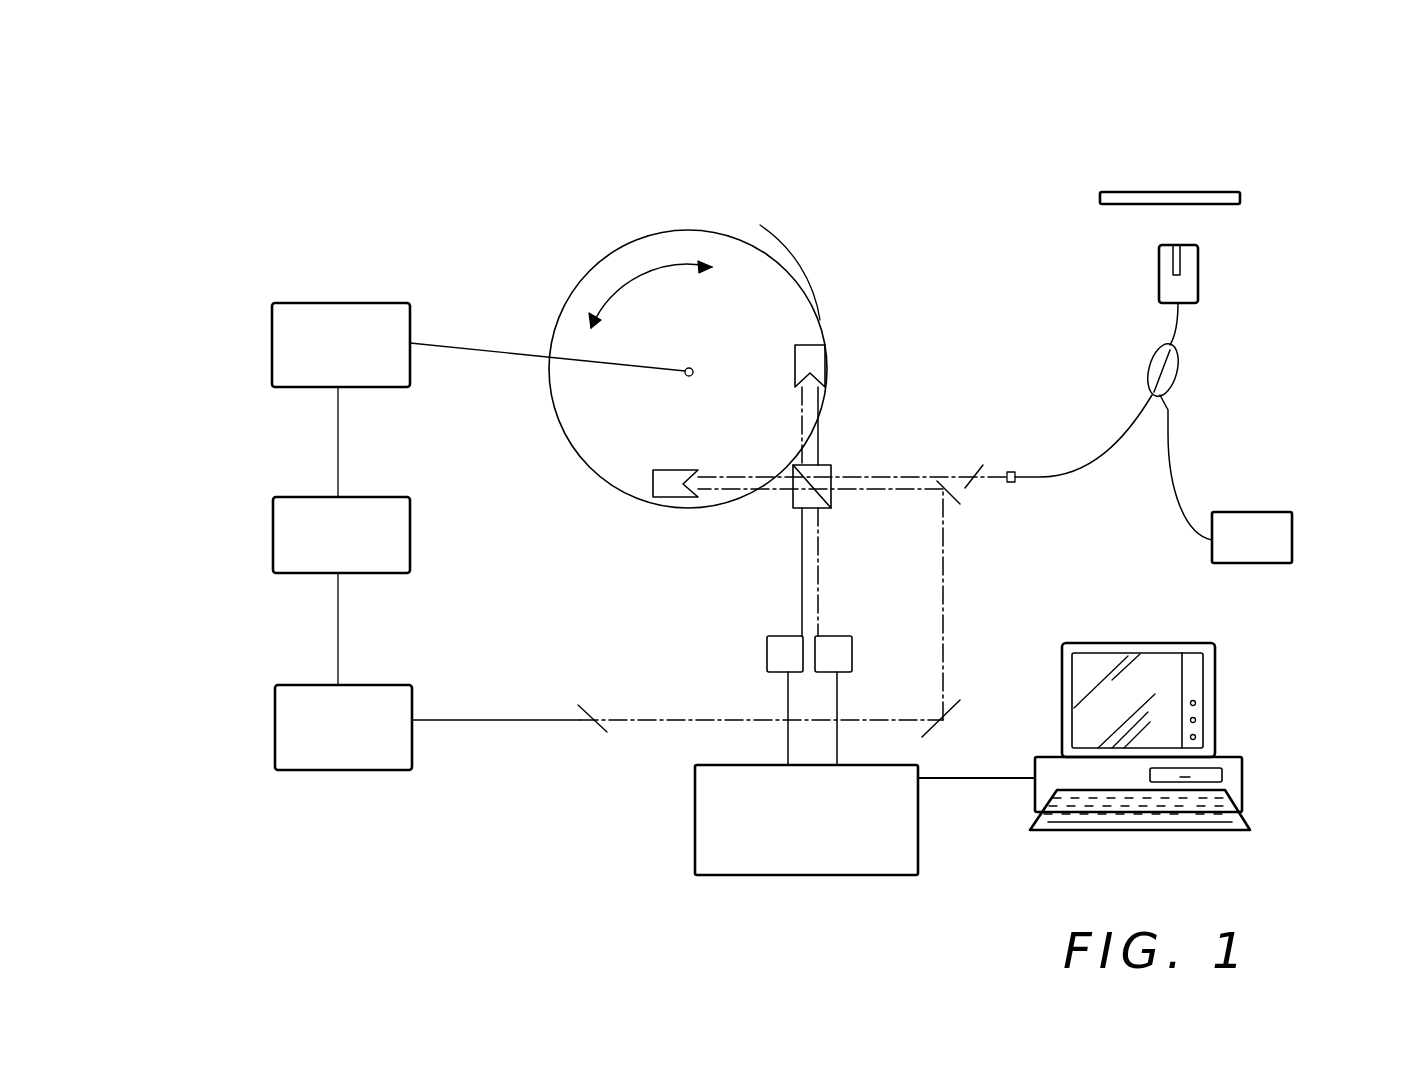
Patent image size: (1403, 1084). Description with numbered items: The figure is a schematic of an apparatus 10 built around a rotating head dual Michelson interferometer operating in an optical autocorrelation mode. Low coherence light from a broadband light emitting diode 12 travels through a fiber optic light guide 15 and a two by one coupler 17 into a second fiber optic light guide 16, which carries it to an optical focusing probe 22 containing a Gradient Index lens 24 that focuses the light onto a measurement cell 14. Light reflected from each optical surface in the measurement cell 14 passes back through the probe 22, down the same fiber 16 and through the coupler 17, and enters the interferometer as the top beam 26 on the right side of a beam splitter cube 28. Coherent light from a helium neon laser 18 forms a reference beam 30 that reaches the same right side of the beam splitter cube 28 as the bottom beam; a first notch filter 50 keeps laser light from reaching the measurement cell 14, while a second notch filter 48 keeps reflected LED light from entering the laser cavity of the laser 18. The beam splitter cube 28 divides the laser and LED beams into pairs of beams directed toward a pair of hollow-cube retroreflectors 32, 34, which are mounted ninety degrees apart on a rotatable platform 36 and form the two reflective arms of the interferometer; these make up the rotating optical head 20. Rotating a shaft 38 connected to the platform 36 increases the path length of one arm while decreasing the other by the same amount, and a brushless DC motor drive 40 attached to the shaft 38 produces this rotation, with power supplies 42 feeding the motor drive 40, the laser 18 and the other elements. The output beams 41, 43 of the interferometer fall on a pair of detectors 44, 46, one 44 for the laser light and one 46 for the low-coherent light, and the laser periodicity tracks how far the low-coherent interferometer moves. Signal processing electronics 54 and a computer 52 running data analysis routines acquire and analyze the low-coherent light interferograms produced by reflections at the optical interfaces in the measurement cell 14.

The apparatus 10 is at (900, 183).
The light emitting diode 12 is at (1292, 528).
The measurement cell 14 is at (1232, 192).
The fiber optic light guide 15 is at (1168, 432).
The fiber optic light guide 16 is at (1178, 318).
The 2 by 1 coupler 17 is at (1178, 362).
The laser 18 is at (400, 772).
The optical head 20 is at (772, 241).
The optical focusing probe 22 is at (1198, 282).
The Gradient Index lens 24 is at (1182, 255).
The top beam 26 is at (896, 477).
The beam splitter cube 28 is at (826, 463).
The reference beam 30 is at (680, 715).
The hollow-cube retroreflector 32 is at (812, 360).
The hollow-cube retroreflector 34 is at (660, 497).
The rotatable platform 36 is at (792, 306).
The shaft 38 is at (497, 358).
The motor drive 40 is at (348, 303).
The output beam 41 is at (802, 538).
The power supplies 42 is at (410, 533).
The output beam 43 is at (819, 568).
The detector 44 is at (776, 636).
The detector 46 is at (840, 655).
The second notch filter 48 is at (580, 710).
The first notch filter 50 is at (980, 468).
The computer 52 is at (1215, 690).
The signal processing electronics 54 is at (695, 820).